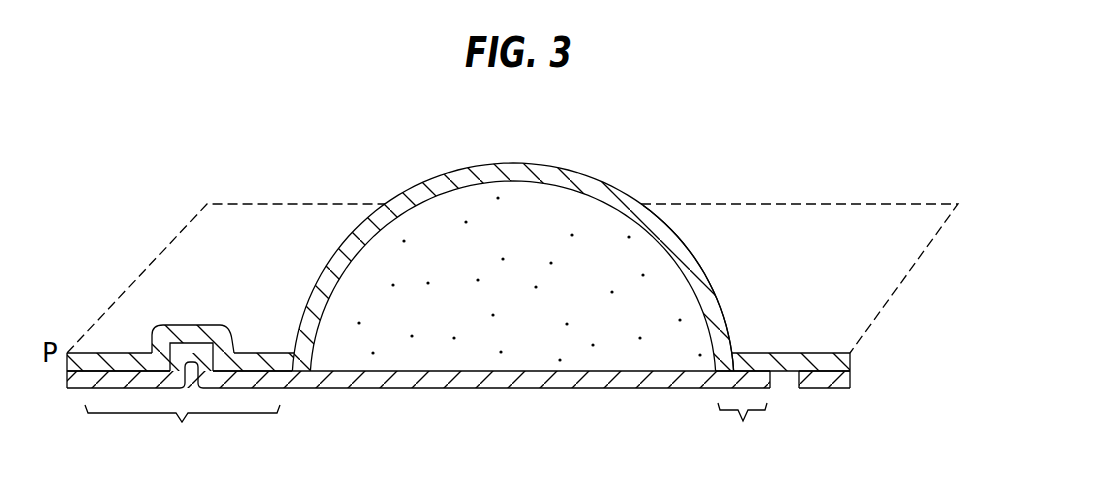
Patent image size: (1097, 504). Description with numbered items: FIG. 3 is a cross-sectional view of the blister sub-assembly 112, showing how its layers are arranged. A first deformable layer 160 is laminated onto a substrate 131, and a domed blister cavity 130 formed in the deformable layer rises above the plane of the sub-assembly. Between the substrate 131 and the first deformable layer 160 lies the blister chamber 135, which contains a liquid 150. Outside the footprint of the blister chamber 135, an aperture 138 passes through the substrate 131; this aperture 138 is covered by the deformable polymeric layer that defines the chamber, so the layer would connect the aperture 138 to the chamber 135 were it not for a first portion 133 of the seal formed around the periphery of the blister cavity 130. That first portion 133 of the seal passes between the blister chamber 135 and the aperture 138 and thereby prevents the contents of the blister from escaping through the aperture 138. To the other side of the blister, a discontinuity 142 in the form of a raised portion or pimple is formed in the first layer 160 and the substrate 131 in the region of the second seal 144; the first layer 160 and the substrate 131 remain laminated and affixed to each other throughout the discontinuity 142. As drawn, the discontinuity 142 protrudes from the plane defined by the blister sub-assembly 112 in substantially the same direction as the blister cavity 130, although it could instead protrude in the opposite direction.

The panel / plane 112 is at (298, 172).
The blister cavity 130 is at (459, 167).
The substrate 131 is at (482, 388).
The first portion of the seal 133 is at (742, 431).
The blister chamber 135 is at (653, 203).
The aperture 138 is at (785, 384).
The discontinuity 142 is at (203, 320).
The second seal 144 is at (182, 432).
The liquid 150 is at (540, 228).
The first deformable layer 160 is at (800, 352).